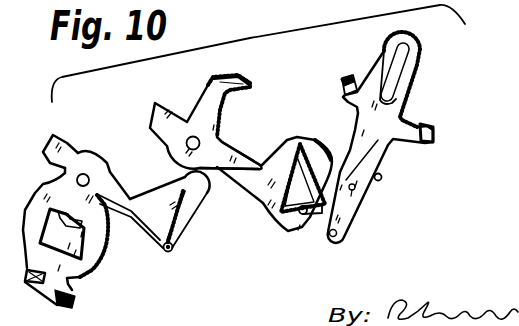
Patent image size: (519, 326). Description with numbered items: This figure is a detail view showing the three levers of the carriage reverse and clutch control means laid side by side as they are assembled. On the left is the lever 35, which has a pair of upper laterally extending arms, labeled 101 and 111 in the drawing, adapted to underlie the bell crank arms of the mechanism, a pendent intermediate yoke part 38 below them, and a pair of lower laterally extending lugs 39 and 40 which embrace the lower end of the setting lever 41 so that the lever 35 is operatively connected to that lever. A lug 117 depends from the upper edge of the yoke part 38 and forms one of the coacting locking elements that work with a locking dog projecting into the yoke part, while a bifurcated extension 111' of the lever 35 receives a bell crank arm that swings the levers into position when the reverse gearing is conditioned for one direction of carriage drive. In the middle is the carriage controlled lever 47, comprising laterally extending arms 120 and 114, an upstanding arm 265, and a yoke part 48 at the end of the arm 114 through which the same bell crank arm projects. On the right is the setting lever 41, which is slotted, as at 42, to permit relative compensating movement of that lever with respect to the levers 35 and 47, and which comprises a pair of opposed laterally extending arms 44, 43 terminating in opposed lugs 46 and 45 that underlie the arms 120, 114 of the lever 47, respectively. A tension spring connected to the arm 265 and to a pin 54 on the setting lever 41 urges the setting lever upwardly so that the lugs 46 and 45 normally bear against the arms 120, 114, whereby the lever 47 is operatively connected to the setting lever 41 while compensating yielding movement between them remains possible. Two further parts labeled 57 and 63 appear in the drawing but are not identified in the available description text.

The lever 35 is at (172, 250).
The pendent intermediate yoke part 38 is at (89, 254).
The lower laterally extending lug 39 is at (73, 302).
The lower laterally extending lug 40 is at (44, 277).
The setting lever 41 is at (378, 139).
The slot 42 is at (407, 53).
The laterally extending arm 43 is at (400, 128).
The laterally extending arm 44 is at (359, 76).
The lug 45 is at (436, 129).
The lug 46 is at (347, 75).
The carriage controlled lever 47 is at (218, 168).
The yoke part 48 is at (308, 147).
The pin 54 is at (382, 178).
The bracket 57 is at (516, 24).
The pin 63 is at (318, 214).
The tab 101 is at (58, 138).
The upper laterally extending arm 111 is at (80, 200).
The bifurcated extension 111' is at (198, 223).
The laterally extending arm 114 is at (240, 165).
The lug 117 is at (102, 202).
The laterally extending arm 120 is at (170, 113).
The upstanding arm 265 is at (228, 95).